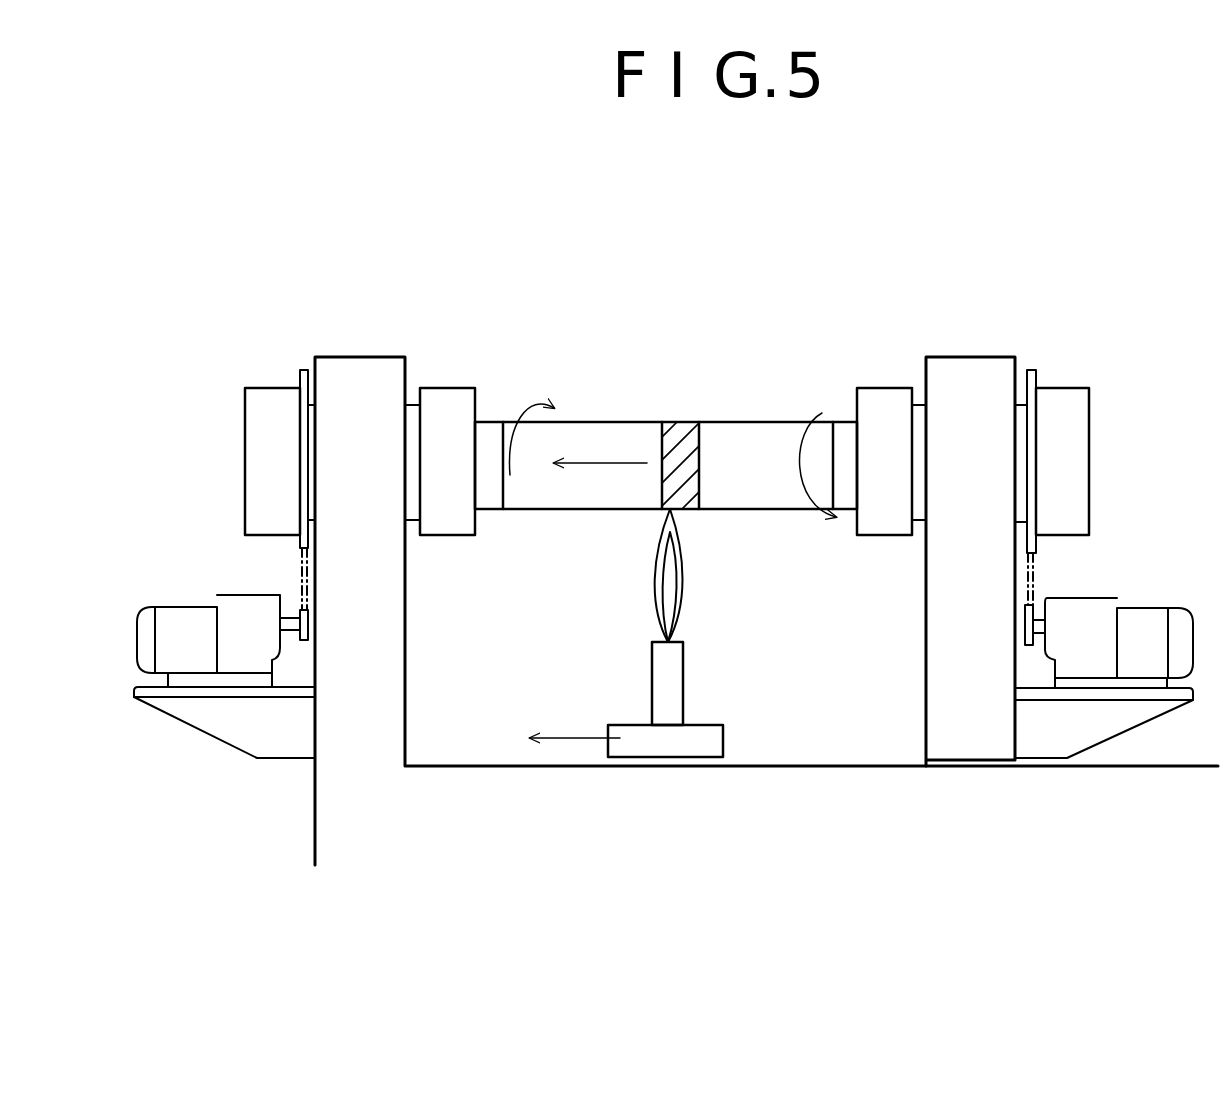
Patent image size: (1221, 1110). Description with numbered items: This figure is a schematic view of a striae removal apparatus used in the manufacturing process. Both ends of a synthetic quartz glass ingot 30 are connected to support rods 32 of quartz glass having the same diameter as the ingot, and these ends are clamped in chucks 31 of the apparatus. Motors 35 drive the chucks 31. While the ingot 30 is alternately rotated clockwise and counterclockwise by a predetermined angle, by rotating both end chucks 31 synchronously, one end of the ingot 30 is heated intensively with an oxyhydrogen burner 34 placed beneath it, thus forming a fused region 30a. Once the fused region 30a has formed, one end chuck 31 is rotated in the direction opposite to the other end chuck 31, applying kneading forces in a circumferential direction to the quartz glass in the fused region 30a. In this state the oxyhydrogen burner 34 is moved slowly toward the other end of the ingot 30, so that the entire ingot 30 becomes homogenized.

The synthetic quartz glass ingot 30 is at (589, 490).
The fused region 30a is at (683, 427).
The chuck 31 is at (450, 402).
The support rod 32 is at (488, 497).
The oxyhydrogen burner 34 is at (672, 692).
The motor 35 is at (187, 625).